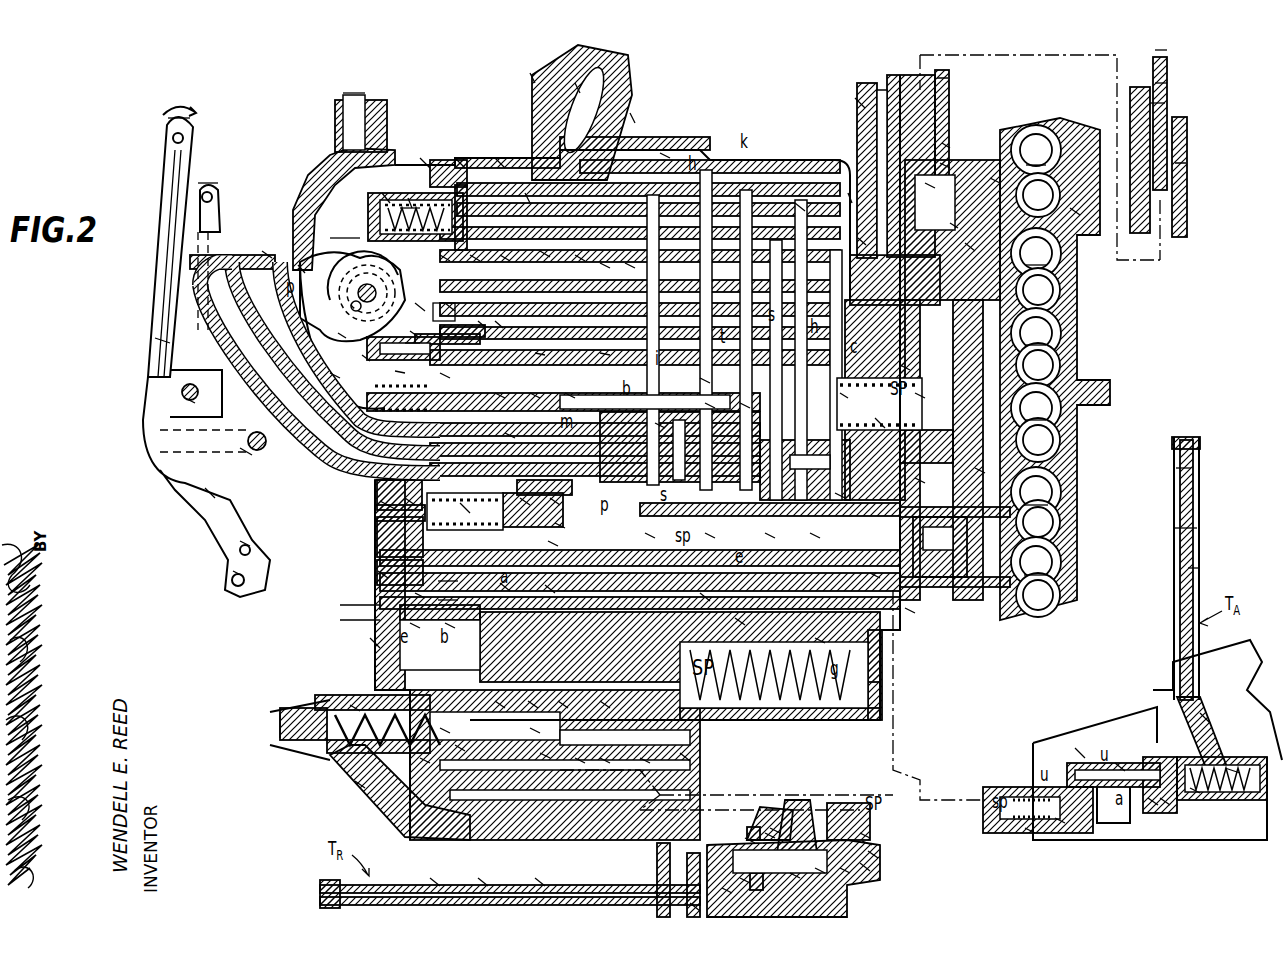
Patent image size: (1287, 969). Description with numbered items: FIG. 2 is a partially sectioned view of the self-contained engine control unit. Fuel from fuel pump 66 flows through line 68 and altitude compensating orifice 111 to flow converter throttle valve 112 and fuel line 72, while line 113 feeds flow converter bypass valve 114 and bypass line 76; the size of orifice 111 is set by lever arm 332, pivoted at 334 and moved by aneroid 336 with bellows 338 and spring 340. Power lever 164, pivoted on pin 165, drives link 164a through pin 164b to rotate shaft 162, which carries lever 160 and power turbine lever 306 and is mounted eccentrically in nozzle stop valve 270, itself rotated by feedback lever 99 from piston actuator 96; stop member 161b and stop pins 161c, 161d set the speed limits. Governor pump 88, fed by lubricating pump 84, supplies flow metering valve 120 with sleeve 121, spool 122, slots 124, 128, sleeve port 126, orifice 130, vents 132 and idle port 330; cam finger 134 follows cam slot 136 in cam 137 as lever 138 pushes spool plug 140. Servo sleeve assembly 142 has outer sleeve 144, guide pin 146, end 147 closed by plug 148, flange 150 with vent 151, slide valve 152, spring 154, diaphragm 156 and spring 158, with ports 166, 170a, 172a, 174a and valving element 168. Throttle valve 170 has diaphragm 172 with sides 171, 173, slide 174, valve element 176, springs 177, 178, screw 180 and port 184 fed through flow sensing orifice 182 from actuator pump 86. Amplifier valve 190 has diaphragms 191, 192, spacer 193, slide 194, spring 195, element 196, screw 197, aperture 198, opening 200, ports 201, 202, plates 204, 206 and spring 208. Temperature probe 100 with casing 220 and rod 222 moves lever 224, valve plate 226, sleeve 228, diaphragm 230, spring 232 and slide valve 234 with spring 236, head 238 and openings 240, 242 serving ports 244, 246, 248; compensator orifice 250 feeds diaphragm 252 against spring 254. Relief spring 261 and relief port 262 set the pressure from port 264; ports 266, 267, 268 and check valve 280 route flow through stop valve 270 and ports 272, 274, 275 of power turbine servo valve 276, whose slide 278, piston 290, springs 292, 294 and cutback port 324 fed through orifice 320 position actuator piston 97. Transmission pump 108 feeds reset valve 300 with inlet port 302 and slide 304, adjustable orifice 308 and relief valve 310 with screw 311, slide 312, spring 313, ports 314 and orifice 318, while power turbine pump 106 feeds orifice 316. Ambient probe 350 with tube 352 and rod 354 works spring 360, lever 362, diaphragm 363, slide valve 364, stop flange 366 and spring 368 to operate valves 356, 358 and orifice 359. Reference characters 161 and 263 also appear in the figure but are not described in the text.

The fuel pump 66 is at (1036, 156).
The line 68 is at (945, 170).
The fuel line 72 is at (855, 110).
The bypass line 76 is at (1075, 220).
The lubricating pump 84 is at (1036, 411).
The actuator pump 86 is at (1036, 256).
The speed governor pump 88 is at (1036, 336).
The piston actuator 96 is at (530, 80).
The actuator piston 97 is at (575, 90).
The feedback lever 99 is at (212, 200).
The temperature probe 100 is at (536, 877).
The power turbine pump 106 is at (1037, 496).
The transmission pump 108 is at (1037, 566).
The altitude compensating orifice 111 is at (925, 192).
The flow converter throttle valve 112 is at (950, 230).
The line 113 is at (995, 185).
The flow converter bypass valve 114 is at (970, 255).
The flow metering valve 120 is at (402, 377).
The outer sleeve 121 is at (448, 312).
The hollow spool 122 is at (498, 330).
The rearward slot 124 is at (480, 330).
The sleeve port 126 is at (434, 376).
The forward slot 128 is at (533, 352).
The sleeve orifice 130 is at (575, 360).
The vent openings 132 is at (409, 346).
The spool cam finger 134 is at (421, 295).
The cam slot 136 is at (413, 319).
The cam 137 is at (451, 295).
The lever 138 is at (340, 342).
The spool plug 140 is at (365, 365).
The servo sleeve assembly 142 is at (428, 170).
The outer sleeve 144 is at (500, 170).
The guide pin 146 is at (462, 170).
The end 147 is at (860, 250).
The plug 148 is at (850, 200).
The flange member 150 is at (386, 205).
The sump vent 151 is at (410, 210).
The internal slide valve 152 is at (470, 265).
The spring 154 is at (800, 210).
The diaphragm 156 is at (440, 265).
The spring 158 is at (413, 220).
The lever 160 is at (353, 238).
The adjusting screw 161 is at (350, 120).
The stop member 161b is at (210, 500).
The stop pin 161c is at (235, 586).
The stop pin 161d is at (243, 552).
The shaft 162 is at (300, 275).
The power lever 164 is at (185, 133).
The link 164a is at (160, 350).
The pin 164b is at (182, 408).
The pin 165 is at (247, 460).
The sleeve port 166 is at (525, 200).
The valving element 168 is at (540, 260).
The Delta P throttle valve 170 is at (365, 654).
The port 170a is at (575, 265).
The side of diaphragm 171 is at (451, 572).
The diaphragm 172 is at (420, 600).
The port 172a is at (635, 120).
The other side of diaphragm 173 is at (380, 580).
The slide 174 is at (451, 591).
The aperture 174a is at (500, 262).
The valve element 176 is at (465, 625).
The biasing spring 177 is at (548, 578).
The spring 178 is at (406, 624).
The threaded screw 180 is at (345, 620).
The flow sensing orifice 182 is at (898, 370).
The throttle valve port 184 is at (514, 576).
The amplifier valve 190 is at (352, 797).
The diaphragm 191 is at (428, 765).
The diaphragm 192 is at (451, 752).
The rigid spacer 193 is at (440, 735).
The valve slide 194 is at (531, 719).
The spring 195 is at (355, 710).
The valve element 196 is at (603, 754).
The adjusting screw 197 is at (278, 720).
The aperture 198 is at (578, 754).
The central opening 200 is at (660, 755).
The port 201 is at (600, 725).
The port 202 is at (645, 751).
The stop plate 204 is at (500, 693).
The fixed plate 206 is at (561, 693).
The spring 208 is at (533, 692).
The outer casing 220 is at (432, 885).
The center rod 222 is at (478, 885).
The lever 224 is at (690, 915).
The valve plate 226 is at (730, 895).
The sleeve 228 is at (738, 884).
The diaphragm 230 is at (761, 823).
The spring 232 is at (738, 830).
The slide valve 234 is at (865, 878).
The spring 236 is at (878, 865).
The valve head 238 is at (845, 882).
The central opening 240 is at (820, 880).
The longitudinal opening 242 is at (800, 885).
The port 244 is at (862, 845).
The port 246 is at (780, 835).
The port 248 is at (891, 830).
The compensator orifice 250 is at (552, 757).
The compensator diaphragm 252 is at (815, 645).
The spring 254 is at (733, 610).
The relief spring 261 is at (929, 396).
The relief port 262 is at (857, 396).
The valve land 263 is at (706, 402).
The port 264 is at (740, 402).
The sleeve port 266 is at (665, 160).
The port 267 is at (598, 274).
The port 268 is at (625, 274).
The nozzle stop valve 270 is at (262, 255).
The port 272 is at (708, 534).
The port 274 is at (765, 534).
The port 275 is at (813, 534).
The power turbine servo valve 276 is at (720, 540).
The slide 278 is at (835, 492).
The check valve 280 is at (656, 427).
The piston 290 is at (915, 480).
The spring 292 is at (873, 581).
The spring 294 is at (975, 490).
The power turbine reset valve 300 is at (496, 384).
The inlet port 302 is at (566, 384).
The slide member 304 is at (506, 426).
The power turbine lever 306 is at (326, 370).
The adjustable orifice 308 is at (878, 417).
The relief valve 310 is at (458, 512).
The adjusting screw 311 is at (385, 512).
The hollow slide member 312 is at (553, 492).
The spring 313 is at (406, 494).
The ports 314 is at (525, 492).
The orifice 316 is at (745, 572).
The orifice 318 is at (551, 547).
The orifice 320 is at (702, 369).
The valve port 324 is at (643, 536).
The port 330 is at (533, 384).
The lever arm 332 is at (950, 88).
The pivot 334 is at (948, 150).
The aneroid 336 is at (1163, 90).
The bellows 338 is at (1162, 62).
The outwardly biasing spring 340 is at (1165, 110).
The temperature probe 350 is at (1206, 538).
The steel tube 352 is at (1196, 575).
The tungsten rod 354 is at (1191, 475).
The valve 356 is at (1079, 748).
The valve 358 is at (1030, 840).
The orifice 359 is at (1060, 830).
The biasing spring 360 is at (1230, 775).
The lever 362 is at (1205, 725).
The diaphragm 363 is at (1165, 810).
The slide valve 364 is at (1115, 770).
The stop flange 366 is at (1150, 810).
The spring 368 is at (1195, 800).